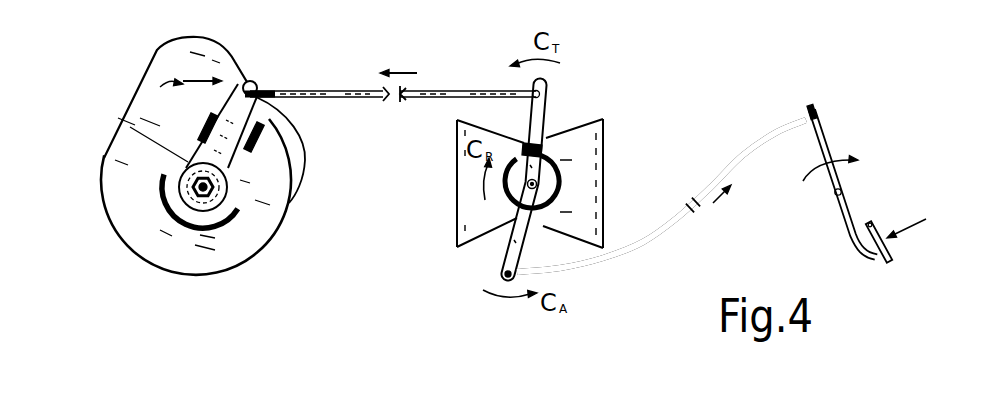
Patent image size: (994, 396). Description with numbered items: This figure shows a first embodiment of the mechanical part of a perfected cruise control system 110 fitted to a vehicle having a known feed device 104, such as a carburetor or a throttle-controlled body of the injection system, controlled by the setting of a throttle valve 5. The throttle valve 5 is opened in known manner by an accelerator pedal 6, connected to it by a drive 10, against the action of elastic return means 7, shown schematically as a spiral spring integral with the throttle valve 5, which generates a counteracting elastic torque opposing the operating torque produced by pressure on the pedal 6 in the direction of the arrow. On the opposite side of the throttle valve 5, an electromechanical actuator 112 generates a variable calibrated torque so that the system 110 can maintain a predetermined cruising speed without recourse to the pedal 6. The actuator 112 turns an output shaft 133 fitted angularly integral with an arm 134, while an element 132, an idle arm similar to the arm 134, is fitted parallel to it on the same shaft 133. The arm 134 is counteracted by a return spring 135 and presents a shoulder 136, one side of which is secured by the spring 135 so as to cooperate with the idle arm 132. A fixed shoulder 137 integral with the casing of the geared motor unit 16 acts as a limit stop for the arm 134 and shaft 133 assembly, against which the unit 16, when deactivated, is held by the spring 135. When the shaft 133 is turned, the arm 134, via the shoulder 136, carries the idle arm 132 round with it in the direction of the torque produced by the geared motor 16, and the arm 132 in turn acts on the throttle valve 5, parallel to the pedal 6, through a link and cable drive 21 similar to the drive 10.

The geared motor unit 16 is at (153, 102).
The arm 134 is at (262, 97).
The element (idle arm) 132 is at (203, 138).
The shoulder 136 is at (270, 118).
The return spring 135 is at (158, 207).
The output shaft 133 is at (191, 200).
The electromechanical actuator 112 is at (224, 287).
The fixed shoulder 137 is at (283, 200).
The link and cable drive 21 is at (355, 100).
The control system (device) 110 is at (430, 70).
The feed device 104 is at (605, 121).
The throttle valve 5 is at (564, 212).
The elastic return means 7 is at (512, 205).
The drive 10 is at (674, 230).
The accelerator pedal 6 is at (850, 208).